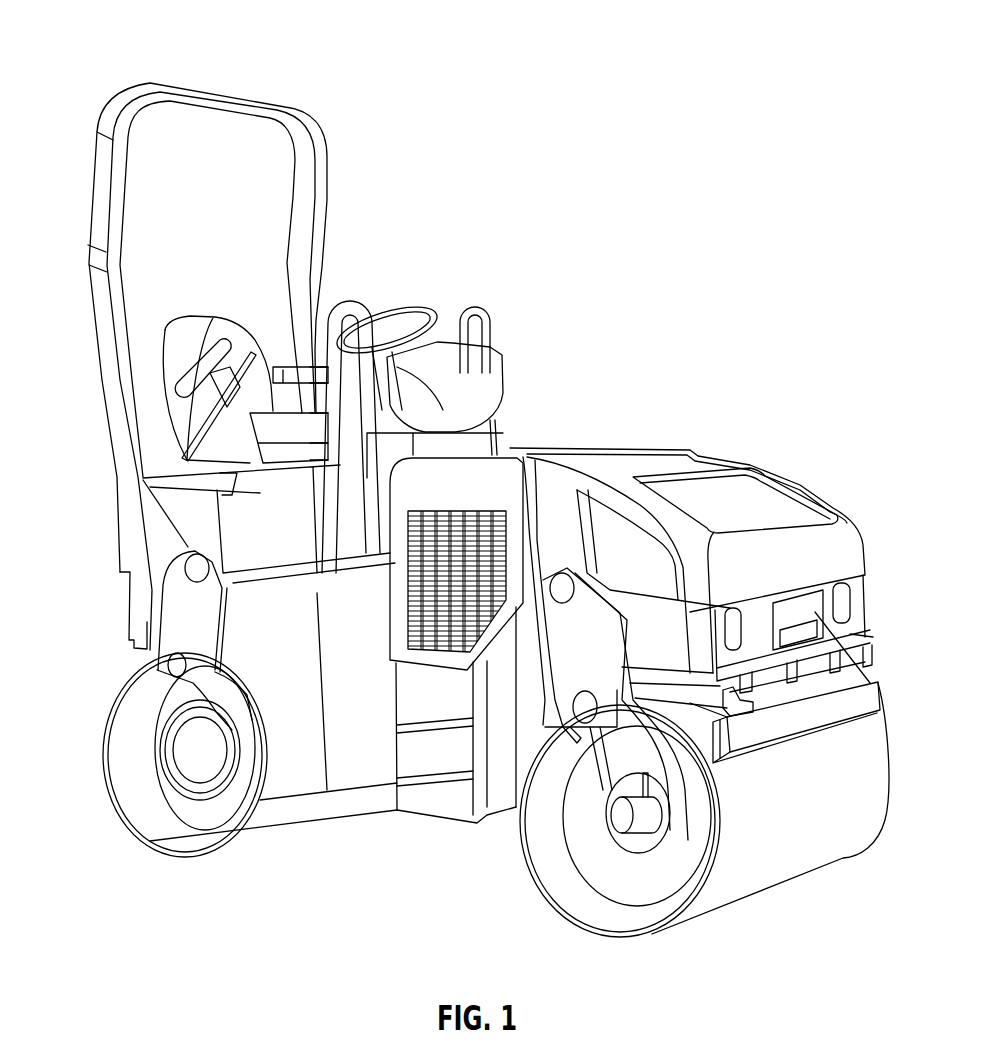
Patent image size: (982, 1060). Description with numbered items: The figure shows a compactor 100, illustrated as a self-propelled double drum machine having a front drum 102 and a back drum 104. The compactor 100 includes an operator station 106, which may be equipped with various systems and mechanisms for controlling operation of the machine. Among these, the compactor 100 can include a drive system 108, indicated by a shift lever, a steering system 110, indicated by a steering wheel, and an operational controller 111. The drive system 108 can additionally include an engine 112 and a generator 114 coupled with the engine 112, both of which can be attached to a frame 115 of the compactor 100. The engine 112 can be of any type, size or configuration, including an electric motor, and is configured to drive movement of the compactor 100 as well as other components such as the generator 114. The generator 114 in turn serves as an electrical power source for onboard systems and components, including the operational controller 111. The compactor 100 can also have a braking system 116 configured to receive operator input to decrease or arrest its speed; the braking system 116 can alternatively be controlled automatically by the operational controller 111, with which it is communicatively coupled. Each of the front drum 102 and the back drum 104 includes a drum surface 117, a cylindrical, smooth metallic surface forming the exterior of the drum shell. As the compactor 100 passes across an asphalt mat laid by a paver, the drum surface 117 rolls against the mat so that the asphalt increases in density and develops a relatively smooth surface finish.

The compactor 100 is at (768, 60).
The front drum 102 is at (815, 880).
The back drum 104 is at (103, 778).
The operator station 106 is at (442, 300).
The drive system 108 is at (230, 325).
The steering system 110 is at (392, 312).
The operational controller 111 is at (455, 252).
The engine 112 is at (812, 614).
The generator 114 is at (876, 684).
The frame 115 is at (843, 547).
The braking system 116 is at (635, 868).
The drum surface 117 is at (307, 818).